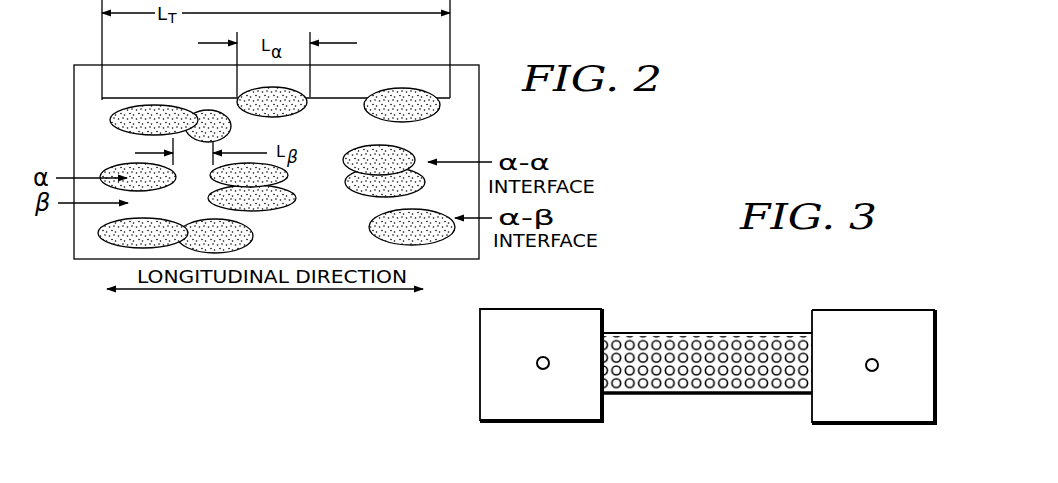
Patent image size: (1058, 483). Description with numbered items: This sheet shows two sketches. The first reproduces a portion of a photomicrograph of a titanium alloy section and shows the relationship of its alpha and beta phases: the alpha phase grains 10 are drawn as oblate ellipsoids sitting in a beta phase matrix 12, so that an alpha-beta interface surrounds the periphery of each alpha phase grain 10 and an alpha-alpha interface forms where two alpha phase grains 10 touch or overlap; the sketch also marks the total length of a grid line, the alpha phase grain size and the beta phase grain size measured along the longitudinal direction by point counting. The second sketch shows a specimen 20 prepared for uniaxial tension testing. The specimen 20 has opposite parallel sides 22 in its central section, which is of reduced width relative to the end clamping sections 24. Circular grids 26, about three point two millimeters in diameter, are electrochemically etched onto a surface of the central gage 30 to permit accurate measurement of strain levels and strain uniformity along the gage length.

In FIG. 2, the alpha phase grains 10 is at (117, 165).
In FIG. 2, the beta phase matrix 12 is at (377, 245).
In FIG. 3, the specimen 20 is at (684, 334).
In FIG. 3, the opposite parallel sides 22 is at (699, 333).
In FIG. 3, the end clamping sections 24 is at (481, 402).
In FIG. 3, the circular grids 26 is at (787, 337).
In FIG. 3, the central gage 30 is at (707, 347).